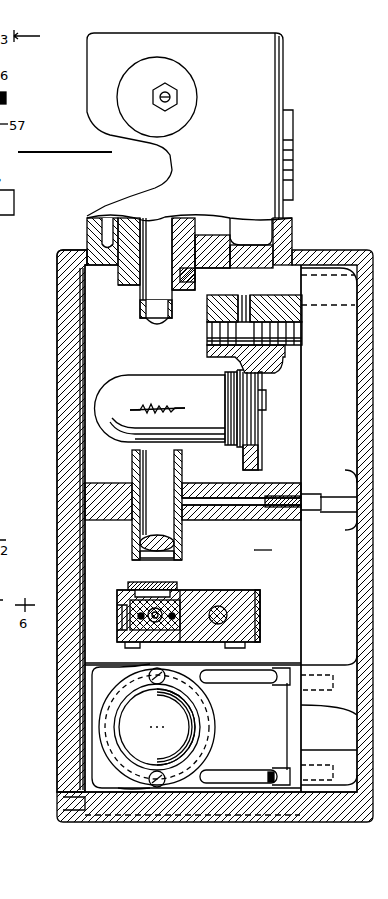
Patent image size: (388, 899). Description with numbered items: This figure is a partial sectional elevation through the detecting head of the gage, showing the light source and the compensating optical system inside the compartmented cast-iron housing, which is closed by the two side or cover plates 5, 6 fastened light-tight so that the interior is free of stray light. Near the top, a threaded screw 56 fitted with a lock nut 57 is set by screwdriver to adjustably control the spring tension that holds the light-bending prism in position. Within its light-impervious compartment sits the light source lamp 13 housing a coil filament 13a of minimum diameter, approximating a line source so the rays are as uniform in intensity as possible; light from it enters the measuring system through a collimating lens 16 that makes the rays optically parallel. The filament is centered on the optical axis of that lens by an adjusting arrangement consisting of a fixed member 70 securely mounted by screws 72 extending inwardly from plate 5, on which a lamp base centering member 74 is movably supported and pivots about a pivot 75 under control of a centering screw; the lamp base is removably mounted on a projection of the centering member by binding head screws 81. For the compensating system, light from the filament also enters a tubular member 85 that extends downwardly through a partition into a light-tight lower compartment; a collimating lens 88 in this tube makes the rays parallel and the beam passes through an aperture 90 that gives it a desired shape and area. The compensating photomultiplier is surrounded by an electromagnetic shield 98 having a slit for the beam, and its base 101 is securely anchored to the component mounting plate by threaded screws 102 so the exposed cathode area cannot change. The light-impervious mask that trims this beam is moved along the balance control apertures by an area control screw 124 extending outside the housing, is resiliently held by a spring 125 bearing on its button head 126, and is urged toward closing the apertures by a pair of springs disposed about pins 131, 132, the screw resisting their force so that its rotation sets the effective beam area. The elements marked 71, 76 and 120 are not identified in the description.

The side or cover plate 5 is at (360, 378).
The side or cover plate 6 is at (62, 700).
The light source lamp 13 is at (115, 385).
The coil filament 13a is at (152, 405).
The collimating lens 16 is at (140, 320).
The threaded screw 56 is at (172, 93).
The lock nut 57 is at (172, 104).
The fixed member 70 is at (232, 298).
The switch assembly 71 is at (263, 543).
The screws 72 is at (350, 328).
The lamp base centering member 74 is at (207, 356).
The pivot 75 is at (207, 335).
The cover plate 76 is at (180, 584).
The binding head screws 81 is at (242, 449).
The tubular member 85 is at (140, 533).
The collimating lens 88 is at (180, 542).
The aperture 90 is at (150, 556).
The electromagnetic shield 98 is at (132, 728).
The base 101 is at (215, 730).
The threaded screws 102 is at (268, 690).
The switch block 120 is at (238, 600).
The area control screw 124 is at (156, 623).
The spring 125 is at (120, 622).
The button head 126 is at (130, 640).
The pin 131 is at (130, 612).
The pin 132 is at (174, 614).